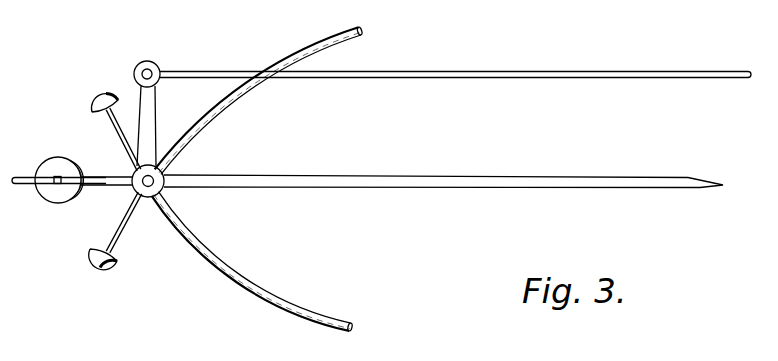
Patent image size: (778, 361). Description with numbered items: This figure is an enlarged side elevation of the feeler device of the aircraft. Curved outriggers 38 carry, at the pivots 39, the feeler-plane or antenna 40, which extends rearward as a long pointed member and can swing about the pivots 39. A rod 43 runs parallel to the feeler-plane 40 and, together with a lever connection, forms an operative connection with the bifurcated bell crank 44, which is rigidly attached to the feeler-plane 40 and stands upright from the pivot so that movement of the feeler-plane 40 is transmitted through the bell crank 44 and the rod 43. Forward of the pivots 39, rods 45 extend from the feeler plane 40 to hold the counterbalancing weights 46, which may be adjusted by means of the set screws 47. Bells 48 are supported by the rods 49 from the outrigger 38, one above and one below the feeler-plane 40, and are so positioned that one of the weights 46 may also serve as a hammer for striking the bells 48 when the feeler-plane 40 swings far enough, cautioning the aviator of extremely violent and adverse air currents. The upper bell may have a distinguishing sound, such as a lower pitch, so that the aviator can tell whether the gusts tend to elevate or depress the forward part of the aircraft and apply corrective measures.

The outrigger 38 is at (310, 43).
The pivot 39 is at (163, 176).
The feeler-plane or antenna 40 is at (393, 182).
The rod 43 is at (477, 76).
The bifurcated bell crank 44 is at (148, 113).
The rod 45 is at (22, 188).
The counterbalancing weight 46 is at (54, 166).
The set screw 47 is at (52, 207).
The bell 48 is at (103, 93).
The rod 49 is at (125, 185).